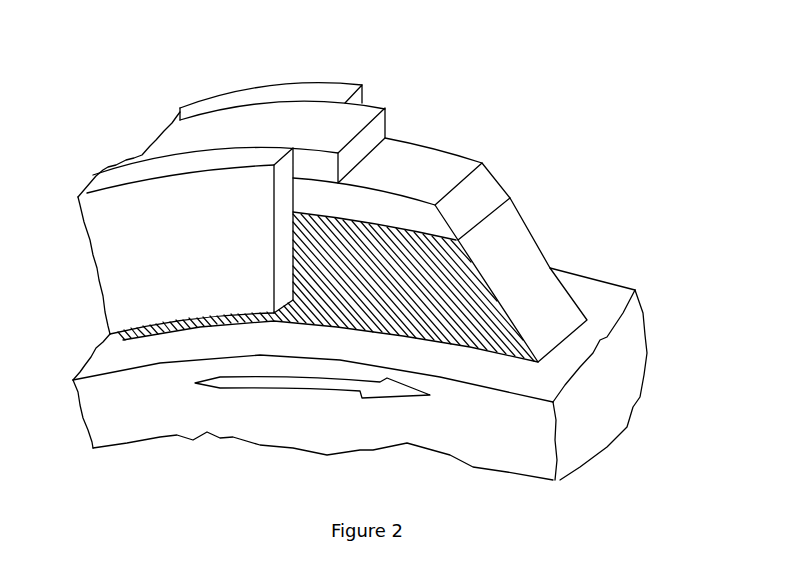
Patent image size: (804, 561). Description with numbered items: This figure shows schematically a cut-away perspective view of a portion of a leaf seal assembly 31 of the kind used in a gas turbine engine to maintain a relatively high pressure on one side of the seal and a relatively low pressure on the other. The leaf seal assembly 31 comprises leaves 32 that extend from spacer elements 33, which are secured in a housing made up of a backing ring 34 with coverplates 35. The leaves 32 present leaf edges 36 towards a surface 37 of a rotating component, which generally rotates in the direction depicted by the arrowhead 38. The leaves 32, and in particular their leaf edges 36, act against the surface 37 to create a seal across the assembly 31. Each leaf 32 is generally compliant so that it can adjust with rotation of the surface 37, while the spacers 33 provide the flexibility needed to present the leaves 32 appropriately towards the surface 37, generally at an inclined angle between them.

The leaf seal assembly 31 is at (316, 197).
The leaves 32 is at (516, 247).
The spacer elements 33 is at (472, 153).
The backing ring 34 is at (177, 137).
The coverplates 35 is at (272, 97).
The leaf edges 36 is at (381, 388).
The surface 37 is at (469, 366).
The arrowhead 38 is at (240, 387).